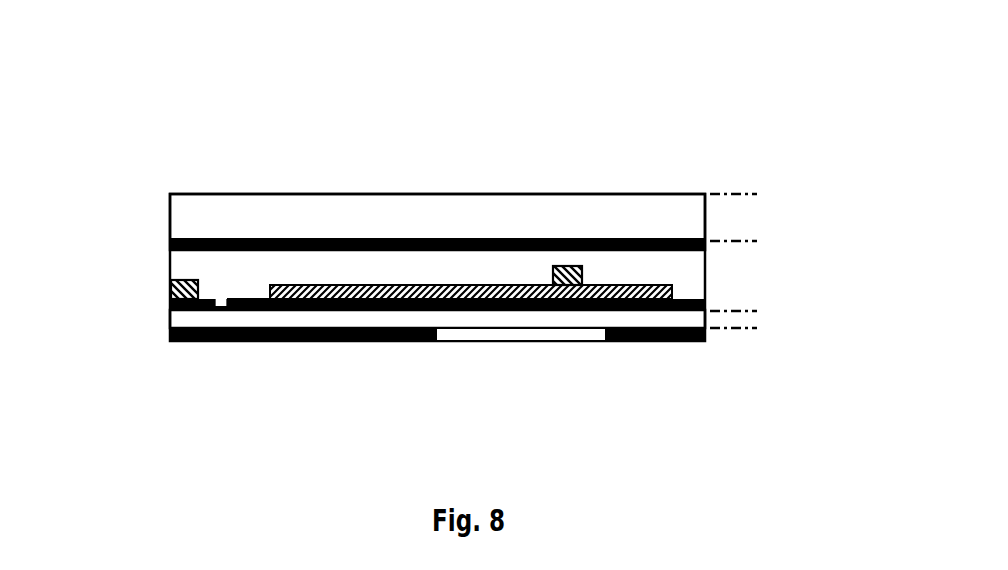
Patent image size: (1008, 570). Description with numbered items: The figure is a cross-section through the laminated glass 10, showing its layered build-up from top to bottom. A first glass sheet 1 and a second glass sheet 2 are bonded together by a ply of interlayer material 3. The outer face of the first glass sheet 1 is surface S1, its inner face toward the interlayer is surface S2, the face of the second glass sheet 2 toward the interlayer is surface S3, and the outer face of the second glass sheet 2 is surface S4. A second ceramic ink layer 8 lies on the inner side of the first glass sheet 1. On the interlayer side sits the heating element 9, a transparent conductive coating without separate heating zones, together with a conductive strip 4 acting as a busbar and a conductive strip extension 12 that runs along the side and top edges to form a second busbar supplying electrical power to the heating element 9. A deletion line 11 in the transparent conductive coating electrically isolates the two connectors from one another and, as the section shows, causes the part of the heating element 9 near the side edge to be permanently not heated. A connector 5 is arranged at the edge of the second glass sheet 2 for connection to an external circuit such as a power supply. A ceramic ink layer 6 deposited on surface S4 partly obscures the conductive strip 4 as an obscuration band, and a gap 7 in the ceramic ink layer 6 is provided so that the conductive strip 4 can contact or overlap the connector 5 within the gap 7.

The first glass sheet 1 is at (170, 222).
The second glass sheet 2 is at (170, 318).
The ply of interlayer material 3 is at (170, 274).
The conductive strip 4 is at (380, 285).
The connector 5 is at (575, 266).
The ceramic ink layer 6 is at (354, 342).
The gap 7 is at (605, 355).
The second ceramic ink layer 8 is at (517, 238).
The heating element 9 is at (249, 299).
The laminated glass 10 is at (168, 92).
The deletion line 11 is at (221, 303).
The conductive strip extension 12 is at (183, 280).
The surface 1 S1 is at (763, 195).
The surface 2 S2 is at (762, 241).
The surface 3 S3 is at (765, 311).
The surface 4 S4 is at (763, 328).